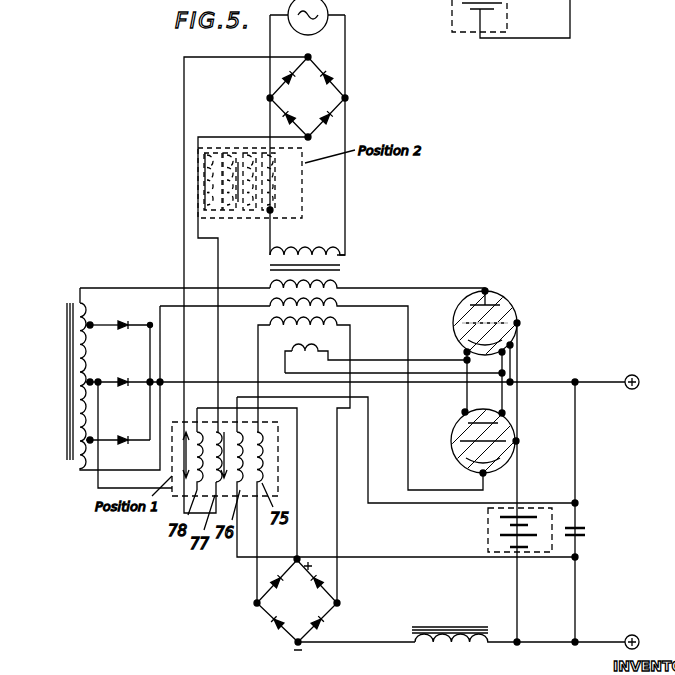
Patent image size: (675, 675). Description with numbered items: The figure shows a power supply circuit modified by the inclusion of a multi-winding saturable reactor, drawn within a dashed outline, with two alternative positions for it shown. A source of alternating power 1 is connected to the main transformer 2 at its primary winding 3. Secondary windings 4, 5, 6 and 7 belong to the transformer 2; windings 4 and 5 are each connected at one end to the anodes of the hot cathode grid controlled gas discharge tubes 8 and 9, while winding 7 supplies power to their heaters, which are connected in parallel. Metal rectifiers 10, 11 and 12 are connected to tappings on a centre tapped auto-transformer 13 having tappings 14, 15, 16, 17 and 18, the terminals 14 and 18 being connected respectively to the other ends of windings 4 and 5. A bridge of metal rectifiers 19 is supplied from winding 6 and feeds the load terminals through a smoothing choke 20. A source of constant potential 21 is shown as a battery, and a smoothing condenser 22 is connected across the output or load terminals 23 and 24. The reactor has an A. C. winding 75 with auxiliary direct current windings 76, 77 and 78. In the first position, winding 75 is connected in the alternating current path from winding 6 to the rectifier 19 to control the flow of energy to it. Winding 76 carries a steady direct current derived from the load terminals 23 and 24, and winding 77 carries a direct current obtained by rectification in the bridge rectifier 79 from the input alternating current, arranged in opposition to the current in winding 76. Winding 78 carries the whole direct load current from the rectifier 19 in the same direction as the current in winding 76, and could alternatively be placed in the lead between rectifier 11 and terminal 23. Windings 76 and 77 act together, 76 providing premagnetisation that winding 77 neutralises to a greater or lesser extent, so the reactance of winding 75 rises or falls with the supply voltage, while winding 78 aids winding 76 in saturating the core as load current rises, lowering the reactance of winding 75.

The source of alternating power 1 is at (314, 27).
The main transformer 2 is at (313, 267).
The primary winding 3 is at (307, 240).
The secondary winding 4 is at (282, 280).
The secondary winding 5 is at (321, 389).
The secondary winding 6 is at (313, 458).
The secondary winding 7 is at (393, 358).
The hot cathode grid controlled gas discharge tube 8 is at (485, 451).
The hot cathode grid controlled gas discharge tube 9 is at (483, 443).
The metal rectifier 10 is at (135, 375).
The metal rectifier 11 is at (355, 376).
The metal rectifier 12 is at (118, 434).
The centre tapped auto-transformer 13 is at (101, 430).
The tapping 14 is at (105, 377).
The tapping 15 is at (102, 319).
The tapping 16 is at (102, 353).
The tapping 17 is at (90, 424).
The tapping 18 is at (86, 455).
The bridge of metal rectifiers 19 is at (307, 612).
The smoothing choke 20 is at (461, 625).
The source of constant potential 21 is at (520, 530).
The smoothing condenser 22 is at (587, 512).
The output terminal 23 is at (627, 369).
The output terminal 24 is at (627, 631).
The A. C. winding 75 is at (262, 183).
The auxiliary direct current winding 76 is at (247, 222).
The auxiliary direct current winding 77 is at (235, 218).
The auxiliary direct current winding 78 is at (230, 209).
The bridge rectifier 79 is at (316, 106).